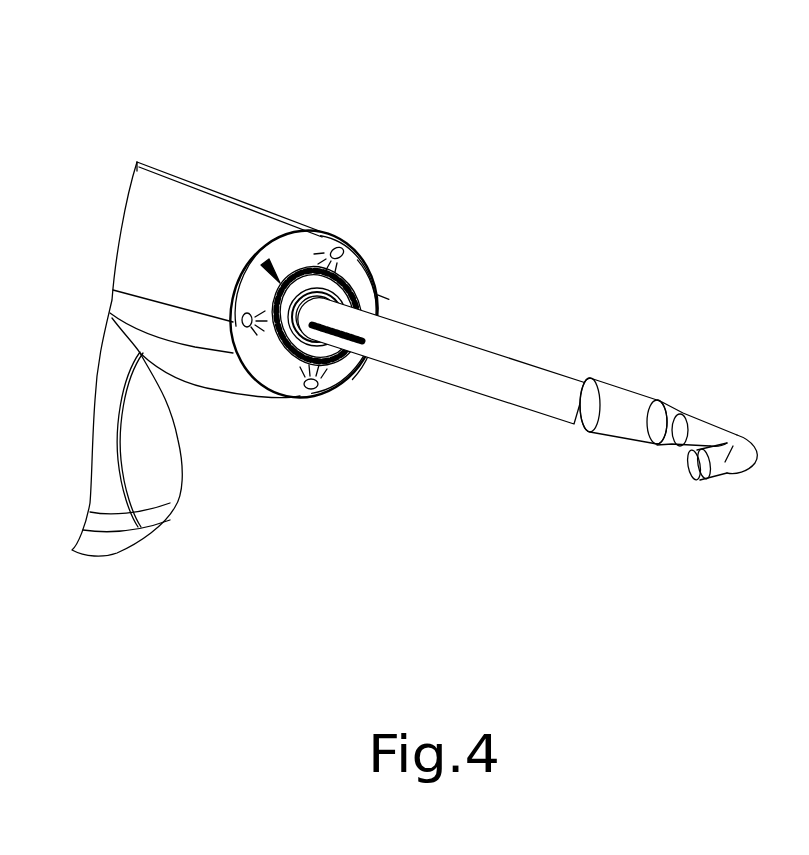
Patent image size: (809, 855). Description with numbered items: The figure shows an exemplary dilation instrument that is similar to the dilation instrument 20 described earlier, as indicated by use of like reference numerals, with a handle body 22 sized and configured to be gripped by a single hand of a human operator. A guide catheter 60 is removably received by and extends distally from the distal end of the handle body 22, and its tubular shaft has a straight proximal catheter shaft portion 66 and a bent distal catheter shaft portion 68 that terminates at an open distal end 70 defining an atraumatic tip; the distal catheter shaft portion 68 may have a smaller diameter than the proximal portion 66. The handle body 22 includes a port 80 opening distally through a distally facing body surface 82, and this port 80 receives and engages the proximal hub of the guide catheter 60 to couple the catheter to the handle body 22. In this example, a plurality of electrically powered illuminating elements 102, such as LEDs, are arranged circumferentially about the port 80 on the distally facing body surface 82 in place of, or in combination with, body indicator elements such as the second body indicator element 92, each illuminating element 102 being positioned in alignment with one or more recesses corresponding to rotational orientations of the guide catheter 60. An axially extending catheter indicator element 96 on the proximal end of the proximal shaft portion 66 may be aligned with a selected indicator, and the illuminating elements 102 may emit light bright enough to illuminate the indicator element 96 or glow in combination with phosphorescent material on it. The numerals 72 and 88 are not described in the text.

The dilation instrument 20 is at (526, 105).
The handle body 22 is at (152, 165).
The guide catheter 60 is at (534, 392).
The proximal catheter shaft portion 66 is at (540, 355).
The distal catheter shaft portion 68 is at (720, 468).
The open distal end 70 is at (691, 455).
The bent distal portion 72 is at (762, 440).
The port 80 is at (271, 267).
The distally facing body surface 82 is at (292, 252).
The knob rim 88 is at (393, 283).
The second body indicator element 92 is at (283, 350).
The catheter indicator element 96 is at (357, 353).
The illuminating elements 102 is at (341, 246).